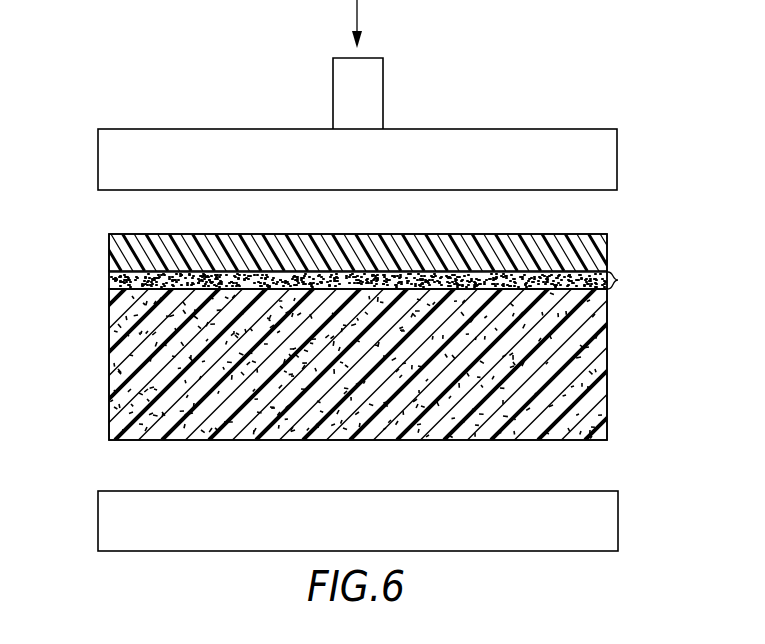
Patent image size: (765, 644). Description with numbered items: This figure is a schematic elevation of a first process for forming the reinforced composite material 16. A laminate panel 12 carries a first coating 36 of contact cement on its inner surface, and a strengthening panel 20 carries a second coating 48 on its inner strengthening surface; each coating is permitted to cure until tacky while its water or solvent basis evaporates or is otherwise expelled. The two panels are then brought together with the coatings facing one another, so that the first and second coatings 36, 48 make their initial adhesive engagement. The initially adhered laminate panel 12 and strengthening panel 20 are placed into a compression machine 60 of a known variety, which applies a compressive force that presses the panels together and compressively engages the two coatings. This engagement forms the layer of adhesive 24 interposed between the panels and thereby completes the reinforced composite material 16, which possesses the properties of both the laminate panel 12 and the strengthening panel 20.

The compression machine 60 is at (522, 129).
The strengthening panel 20 is at (100, 359).
The laminate panel 12 is at (110, 250).
The first coating 36 is at (110, 278).
The second coating 48 is at (110, 285).
The layer of adhesive 24 is at (618, 280).
The reinforced composite material 16 is at (620, 378).